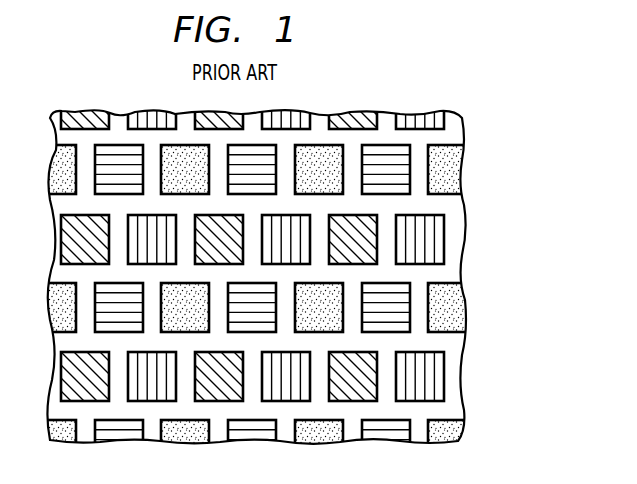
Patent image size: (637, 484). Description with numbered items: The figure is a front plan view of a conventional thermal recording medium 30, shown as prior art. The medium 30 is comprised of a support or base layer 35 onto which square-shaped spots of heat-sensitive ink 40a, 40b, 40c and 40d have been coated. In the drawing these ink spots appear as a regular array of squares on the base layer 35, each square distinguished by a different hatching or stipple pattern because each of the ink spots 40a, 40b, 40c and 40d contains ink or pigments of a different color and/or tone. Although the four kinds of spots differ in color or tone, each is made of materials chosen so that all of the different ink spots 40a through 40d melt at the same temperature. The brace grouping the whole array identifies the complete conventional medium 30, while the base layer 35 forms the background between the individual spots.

The medium 30 is at (543, 360).
The support or base layer 35 is at (450, 136).
The heat-sensitive ink spot 40a is at (378, 220).
The heat-sensitive ink spot 40b is at (440, 245).
The heat-sensitive ink spot 40c is at (345, 287).
The heat-sensitive ink spot 40d is at (402, 330).